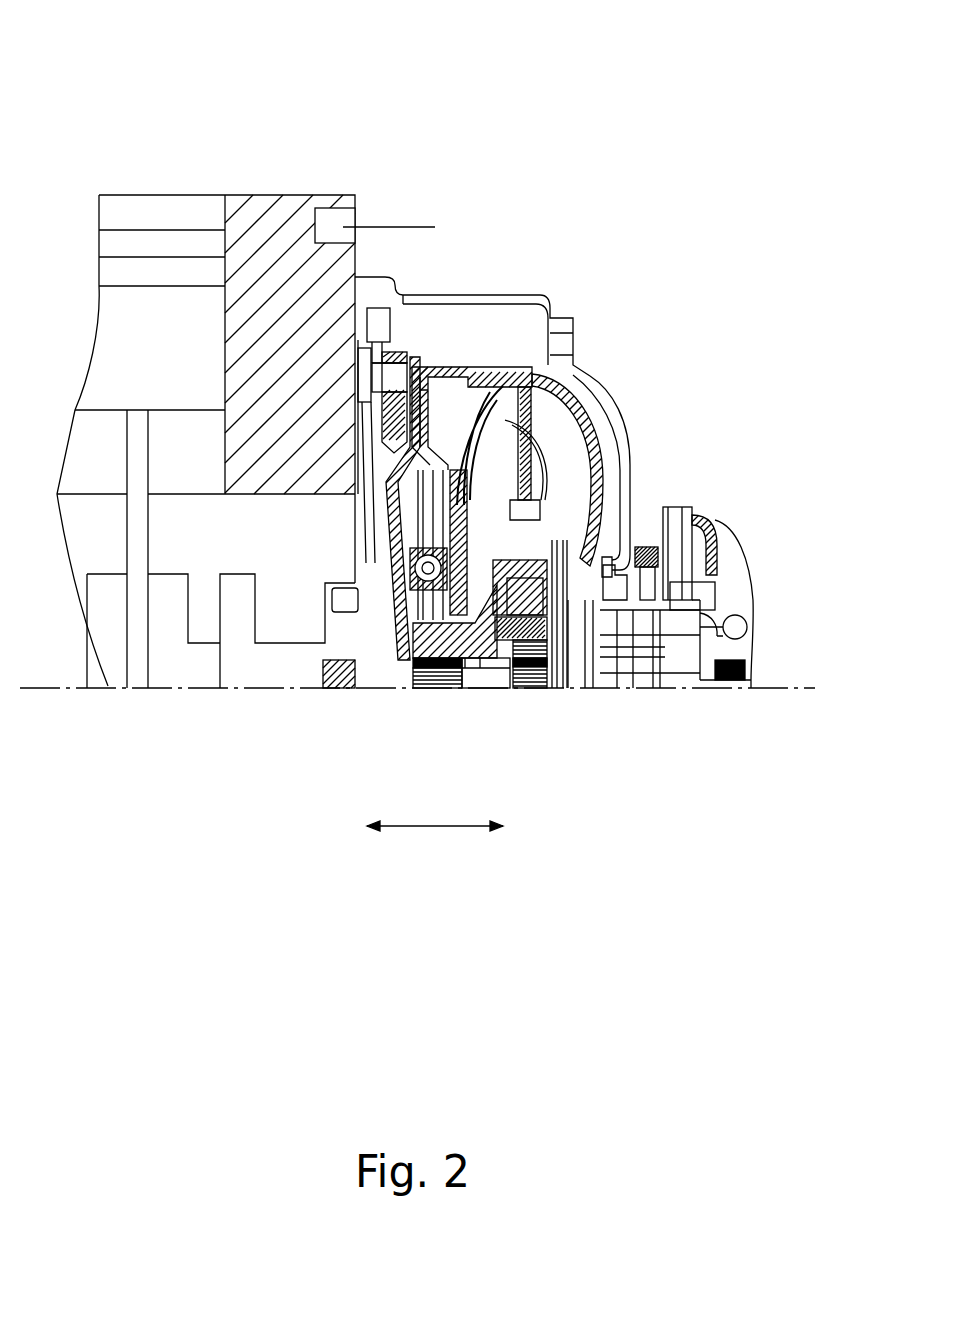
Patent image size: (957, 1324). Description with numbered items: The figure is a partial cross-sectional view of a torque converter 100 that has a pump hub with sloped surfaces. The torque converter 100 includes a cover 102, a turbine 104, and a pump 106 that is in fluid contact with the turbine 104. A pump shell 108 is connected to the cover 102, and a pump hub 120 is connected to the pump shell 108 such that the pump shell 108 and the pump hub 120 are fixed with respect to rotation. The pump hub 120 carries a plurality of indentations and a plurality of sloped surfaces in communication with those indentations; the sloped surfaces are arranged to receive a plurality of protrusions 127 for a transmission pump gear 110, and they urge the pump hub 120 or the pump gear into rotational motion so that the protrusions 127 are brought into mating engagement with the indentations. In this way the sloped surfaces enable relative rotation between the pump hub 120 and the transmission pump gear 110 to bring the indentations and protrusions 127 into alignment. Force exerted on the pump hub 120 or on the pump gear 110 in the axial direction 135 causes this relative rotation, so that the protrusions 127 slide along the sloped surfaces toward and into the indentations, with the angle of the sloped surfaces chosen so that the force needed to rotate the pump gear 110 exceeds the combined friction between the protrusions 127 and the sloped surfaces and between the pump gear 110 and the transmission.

The torque converter 100 is at (570, 80).
The cover 102 is at (460, 366).
The turbine 104 is at (488, 367).
The pump 106 is at (592, 413).
The pump shell 108 is at (578, 377).
The transmission pump gear 110 is at (641, 552).
The pump hub 120 is at (623, 652).
The plurality of protrusions 127 is at (675, 583).
The axial direction 135 is at (422, 826).